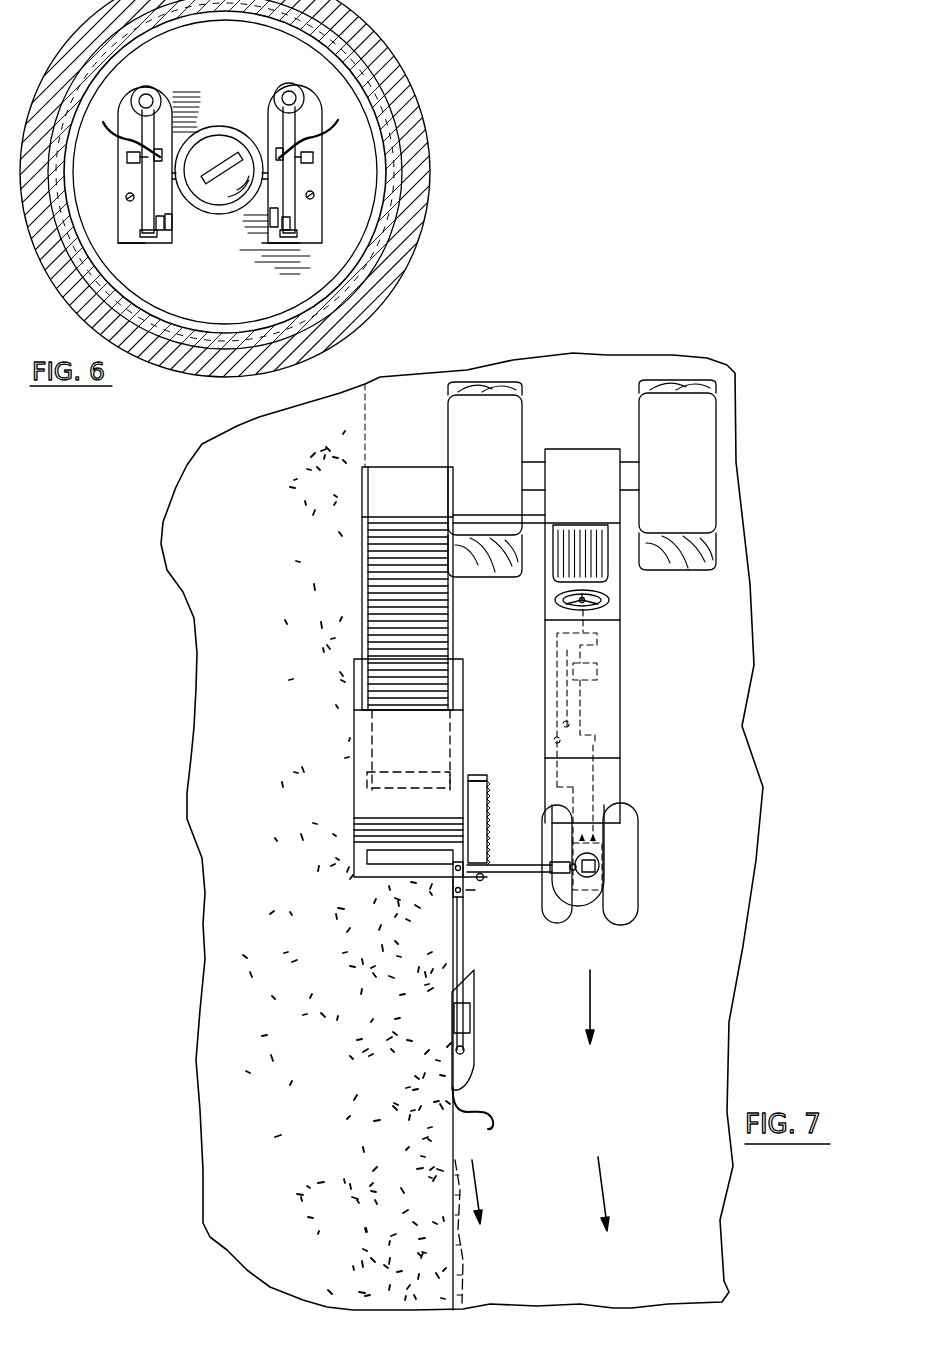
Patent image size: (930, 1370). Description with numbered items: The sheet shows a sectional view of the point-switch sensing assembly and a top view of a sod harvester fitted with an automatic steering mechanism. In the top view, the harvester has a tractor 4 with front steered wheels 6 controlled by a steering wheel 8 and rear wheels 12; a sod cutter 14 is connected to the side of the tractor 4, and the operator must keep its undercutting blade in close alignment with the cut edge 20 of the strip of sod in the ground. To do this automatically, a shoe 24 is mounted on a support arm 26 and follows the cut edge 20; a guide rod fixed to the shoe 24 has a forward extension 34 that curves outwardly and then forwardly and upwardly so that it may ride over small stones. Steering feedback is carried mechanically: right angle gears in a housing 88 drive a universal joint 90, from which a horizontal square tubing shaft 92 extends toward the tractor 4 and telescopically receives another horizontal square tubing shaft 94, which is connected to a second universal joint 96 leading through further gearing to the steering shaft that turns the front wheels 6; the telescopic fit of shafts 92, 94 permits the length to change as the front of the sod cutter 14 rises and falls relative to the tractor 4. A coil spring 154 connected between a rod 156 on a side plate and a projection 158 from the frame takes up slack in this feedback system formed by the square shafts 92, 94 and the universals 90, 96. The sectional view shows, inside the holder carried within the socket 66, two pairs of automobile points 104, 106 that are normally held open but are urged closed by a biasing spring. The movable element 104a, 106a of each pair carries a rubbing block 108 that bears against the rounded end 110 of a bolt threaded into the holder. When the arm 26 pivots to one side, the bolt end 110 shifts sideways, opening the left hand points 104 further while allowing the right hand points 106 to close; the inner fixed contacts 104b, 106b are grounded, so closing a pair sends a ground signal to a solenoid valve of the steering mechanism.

In FIG. 6, the socket 66 is at (400, 68).
In FIG. 6, the left hand pair of points 104 is at (118, 232).
In FIG. 6, the movable element 104a is at (141, 243).
In FIG. 6, the inner fixed contact 104b is at (172, 238).
In FIG. 6, the right hand pair of points 106 is at (322, 219).
In FIG. 6, the movable element 106a is at (310, 243).
In FIG. 6, the inner fixed contact 106b is at (262, 242).
In FIG. 6, the rubbing block 108 is at (256, 134).
In FIG. 6, the rounded end 110 is at (226, 128).
In FIG. 7, the tractor 4 is at (632, 736).
In FIG. 7, the front steered wheels 6 is at (637, 909).
In FIG. 7, the steering wheel 8 is at (611, 599).
In FIG. 7, the rear wheels 12 is at (524, 408).
In FIG. 7, the sod cutter 14 is at (348, 565).
In FIG. 7, the cut edge 20 is at (466, 1242).
In FIG. 7, the shoe 24 is at (490, 1048).
In FIG. 7, the support arm 26 is at (467, 945).
In FIG. 7, the forward extension 34 is at (477, 1104).
In FIG. 7, the housing 88 is at (452, 869).
In FIG. 7, the universal joint 90 is at (482, 880).
In FIG. 7, the horizontal square tubing shaft 92 is at (527, 865).
In FIG. 7, the horizontal square tubing shaft 94 is at (565, 874).
In FIG. 7, the universal joint 96 is at (585, 907).
In FIG. 7, the coil spring 154 is at (488, 805).
In FIG. 7, the rod 156 is at (466, 893).
In FIG. 7, the projection 158 is at (476, 774).